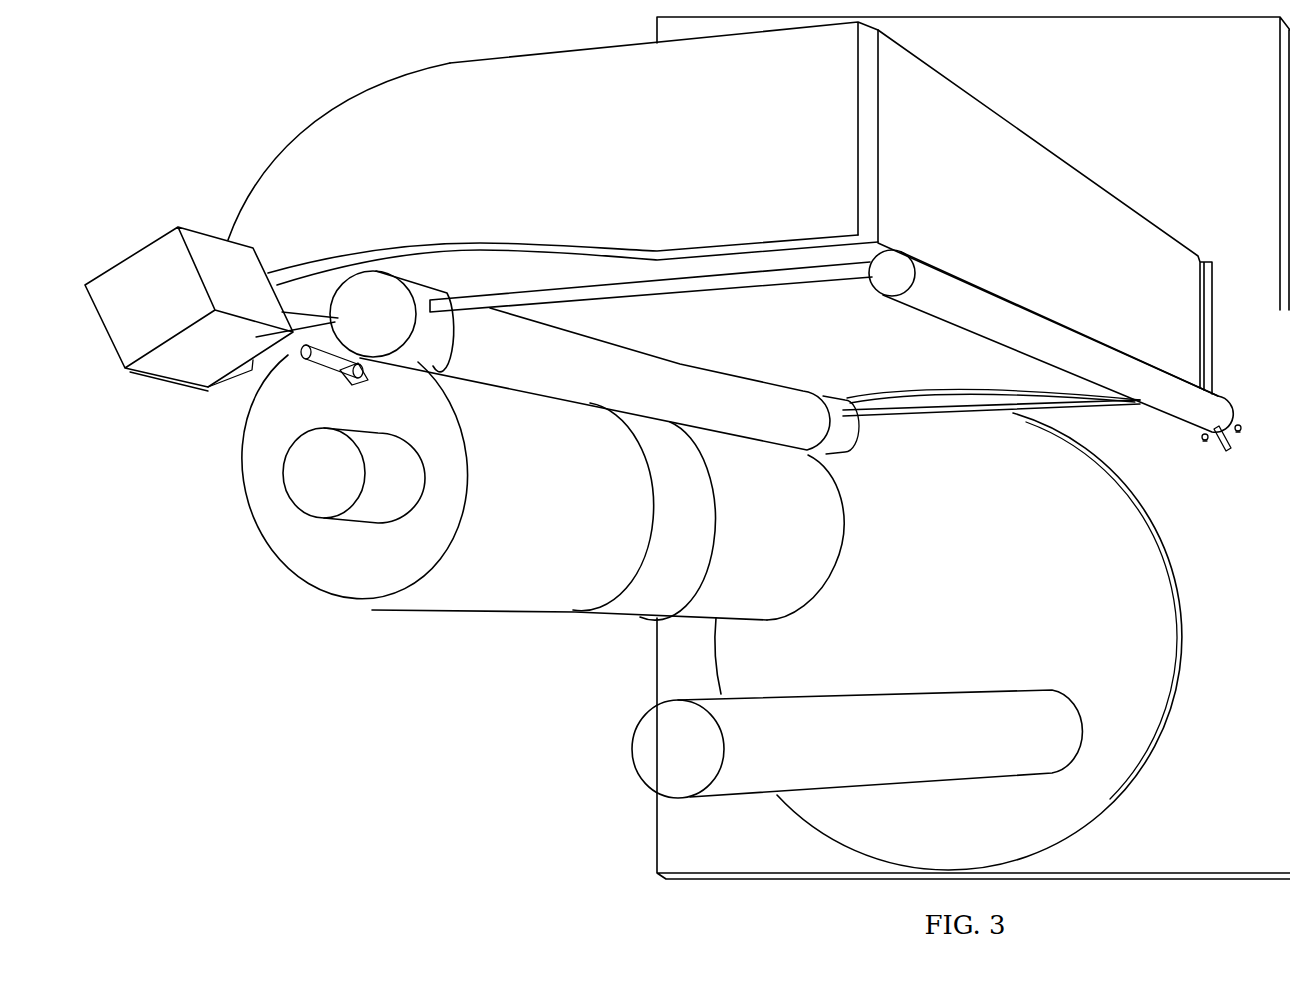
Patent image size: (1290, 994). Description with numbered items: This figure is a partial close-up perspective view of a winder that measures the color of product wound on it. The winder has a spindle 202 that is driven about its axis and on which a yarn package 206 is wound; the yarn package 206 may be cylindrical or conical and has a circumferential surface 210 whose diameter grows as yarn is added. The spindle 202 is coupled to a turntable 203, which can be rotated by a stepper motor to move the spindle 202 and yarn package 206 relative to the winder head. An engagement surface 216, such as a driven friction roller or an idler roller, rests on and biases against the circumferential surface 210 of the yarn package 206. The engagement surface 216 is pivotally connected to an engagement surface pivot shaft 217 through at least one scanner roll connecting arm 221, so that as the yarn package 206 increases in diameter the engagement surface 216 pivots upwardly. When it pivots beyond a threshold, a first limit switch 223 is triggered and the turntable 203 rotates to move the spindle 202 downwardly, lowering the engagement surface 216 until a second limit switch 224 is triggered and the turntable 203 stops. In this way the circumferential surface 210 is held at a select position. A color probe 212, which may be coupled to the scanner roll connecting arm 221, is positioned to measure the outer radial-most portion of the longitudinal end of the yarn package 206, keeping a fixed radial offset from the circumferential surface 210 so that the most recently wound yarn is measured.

The spindle 202 is at (318, 482).
The turntable 203 is at (973, 607).
The yarn package 206 is at (360, 570).
The circumferential surface 210 is at (475, 613).
The color probe 212 is at (293, 357).
The engagement surface 216 is at (573, 375).
The engagement surface pivot shaft 217 is at (1115, 348).
The scanner roll connecting arm 221 is at (800, 285).
The first limit switch 223 is at (1208, 450).
The second limit switch 224 is at (1240, 444).